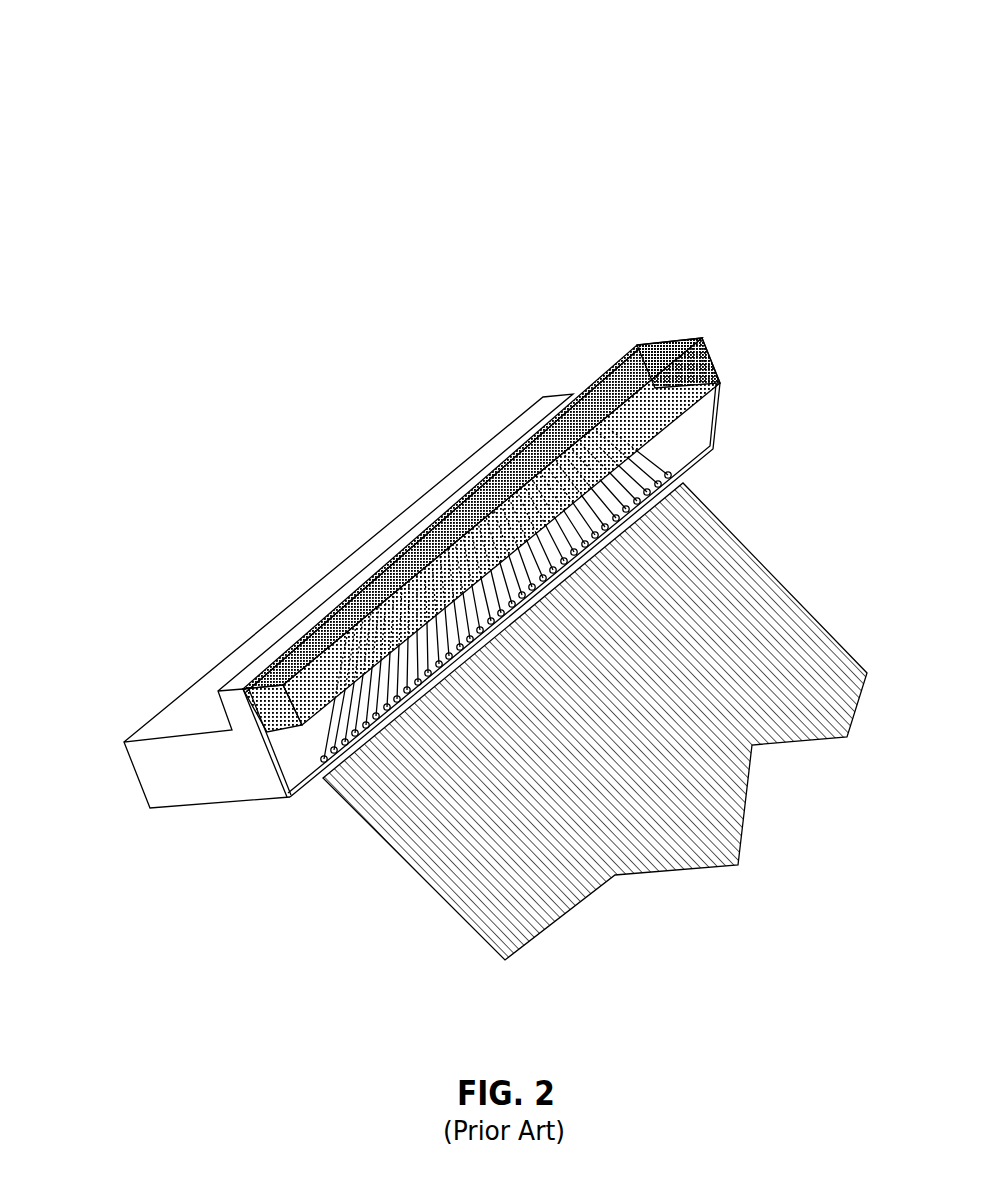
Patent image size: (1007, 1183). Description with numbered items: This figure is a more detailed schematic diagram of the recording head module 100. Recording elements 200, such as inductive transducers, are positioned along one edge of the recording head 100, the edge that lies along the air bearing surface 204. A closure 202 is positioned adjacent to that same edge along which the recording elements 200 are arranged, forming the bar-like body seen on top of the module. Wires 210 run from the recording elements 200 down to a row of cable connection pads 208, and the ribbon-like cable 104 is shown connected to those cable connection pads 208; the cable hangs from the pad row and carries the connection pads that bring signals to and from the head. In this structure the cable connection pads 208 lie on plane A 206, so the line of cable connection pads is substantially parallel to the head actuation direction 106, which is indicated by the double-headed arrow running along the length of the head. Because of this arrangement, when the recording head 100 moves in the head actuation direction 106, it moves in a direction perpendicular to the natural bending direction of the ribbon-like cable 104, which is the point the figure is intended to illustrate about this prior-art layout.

The recording head module 100 is at (481, 36).
The ribbon-like cable 104 is at (767, 562).
The head actuation direction 106 is at (443, 425).
The recording elements 200 is at (546, 440).
The closure 202 is at (714, 360).
The air bearing surface 204 is at (390, 571).
The plane A 206 is at (295, 763).
The cable connection pads 208 is at (320, 773).
The wires 210 is at (660, 459).